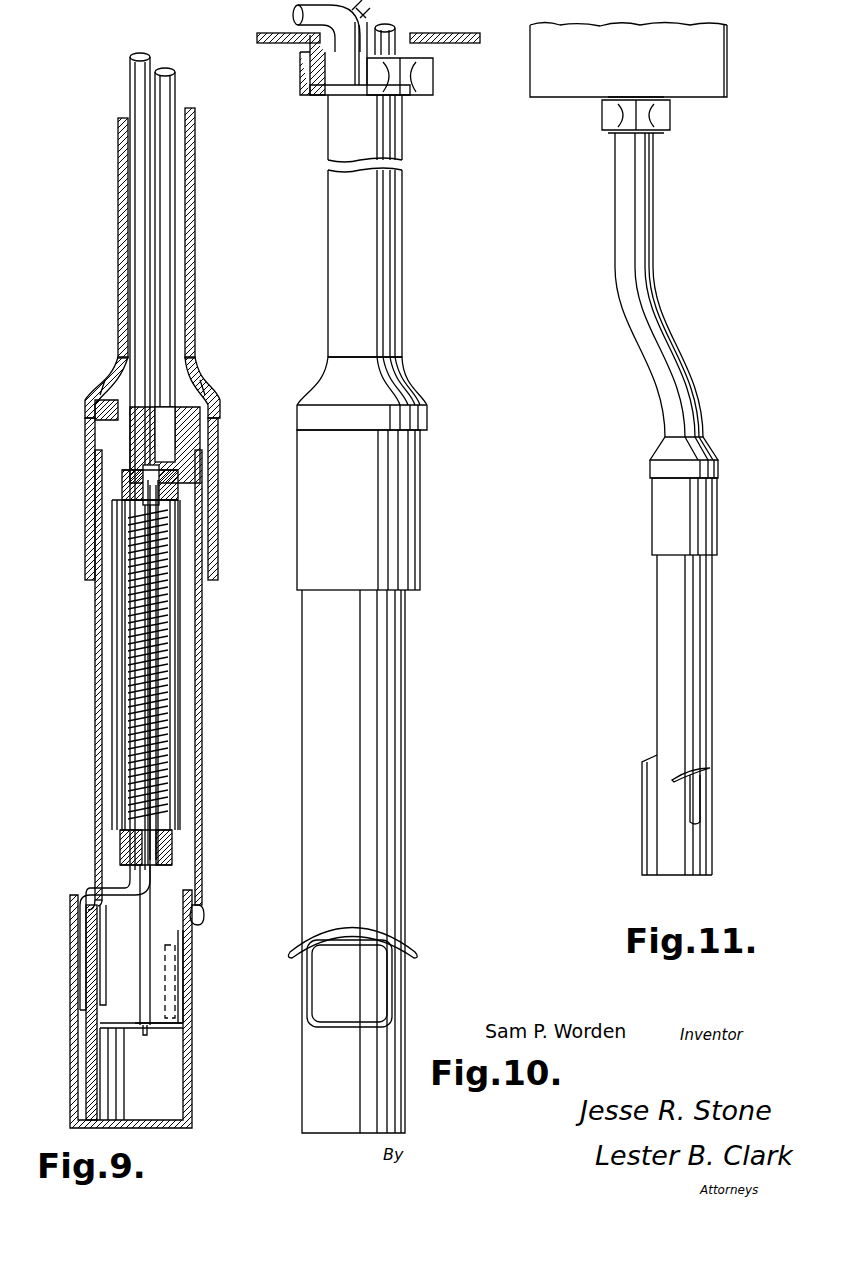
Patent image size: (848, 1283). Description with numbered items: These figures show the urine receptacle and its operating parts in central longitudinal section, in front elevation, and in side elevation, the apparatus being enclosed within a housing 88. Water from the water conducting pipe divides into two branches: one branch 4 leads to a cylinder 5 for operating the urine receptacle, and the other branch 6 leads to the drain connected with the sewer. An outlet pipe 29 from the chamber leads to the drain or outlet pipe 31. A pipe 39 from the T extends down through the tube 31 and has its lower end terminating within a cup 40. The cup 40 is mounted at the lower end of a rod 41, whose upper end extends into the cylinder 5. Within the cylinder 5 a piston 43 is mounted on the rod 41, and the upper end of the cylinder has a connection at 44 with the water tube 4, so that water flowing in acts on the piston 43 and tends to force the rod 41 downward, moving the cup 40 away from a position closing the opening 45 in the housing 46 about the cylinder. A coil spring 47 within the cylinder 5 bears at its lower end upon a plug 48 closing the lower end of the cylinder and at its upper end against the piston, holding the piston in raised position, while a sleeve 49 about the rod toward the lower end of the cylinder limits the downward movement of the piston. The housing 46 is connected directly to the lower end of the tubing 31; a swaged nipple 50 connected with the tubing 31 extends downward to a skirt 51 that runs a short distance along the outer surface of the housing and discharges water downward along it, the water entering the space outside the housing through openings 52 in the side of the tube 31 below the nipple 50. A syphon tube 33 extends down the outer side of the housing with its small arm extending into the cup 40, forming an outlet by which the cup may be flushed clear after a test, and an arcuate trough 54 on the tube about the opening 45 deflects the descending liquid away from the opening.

In FIG. 9, the branch pipe 4 is at (178, 97).
In FIG. 10, the branch pipe 4 is at (395, 35).
In FIG. 9, the cylinder 5 is at (178, 530).
In FIG. 10, the branch pipe 6 is at (366, 8).
In FIG. 10, the outlet pipe 29 is at (318, 40).
In FIG. 9, the drain or outlet pipe 31 is at (196, 250).
In FIG. 10, the drain or outlet pipe 31 is at (403, 258).
In FIG. 11, the drain or outlet pipe 31 is at (655, 186).
In FIG. 9, the syphon tube 33 is at (78, 972).
In FIG. 11, the syphon tube 33 is at (642, 838).
In FIG. 9, the pipe 39 is at (128, 100).
In FIG. 10, the pipe 39 is at (357, 58).
In FIG. 9, the cup 40 is at (192, 972).
In FIG. 9, the rod 41 is at (150, 885).
In FIG. 9, the piston 43 is at (172, 490).
In FIG. 9, the connection 44 is at (165, 457).
In FIG. 9, the opening 45 is at (185, 950).
In FIG. 10, the opening 45 is at (307, 985).
In FIG. 11, the opening 45 is at (705, 822).
In FIG. 9, the housing 46 is at (202, 795).
In FIG. 10, the housing 46 is at (406, 722).
In FIG. 11, the housing 46 is at (713, 634).
In FIG. 9, the coil spring 47 is at (165, 594).
In FIG. 9, the plug 48 is at (170, 833).
In FIG. 9, the sleeve 49 is at (175, 675).
In FIG. 9, the swaged nipple 50 is at (205, 388).
In FIG. 10, the swaged nipple 50 is at (418, 398).
In FIG. 11, the swaged nipple 50 is at (718, 452).
In FIG. 9, the skirt 51 is at (218, 462).
In FIG. 10, the skirt 51 is at (422, 508).
In FIG. 11, the skirt 51 is at (717, 514).
In FIG. 9, the openings 52 is at (105, 405).
In FIG. 9, the arcuate trough 54 is at (204, 915).
In FIG. 10, the arcuate trough 54 is at (398, 930).
In FIG. 11, the arcuate trough 54 is at (710, 768).
In FIG. 10, the housing 88 is at (460, 45).
In FIG. 11, the housing 88 is at (705, 88).